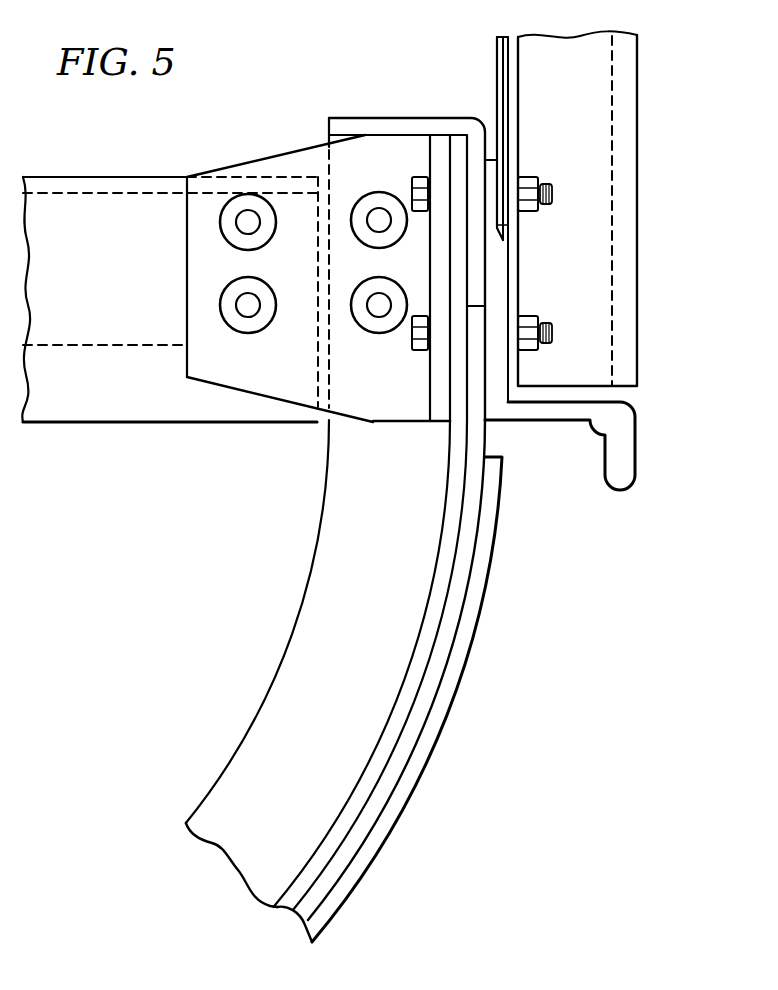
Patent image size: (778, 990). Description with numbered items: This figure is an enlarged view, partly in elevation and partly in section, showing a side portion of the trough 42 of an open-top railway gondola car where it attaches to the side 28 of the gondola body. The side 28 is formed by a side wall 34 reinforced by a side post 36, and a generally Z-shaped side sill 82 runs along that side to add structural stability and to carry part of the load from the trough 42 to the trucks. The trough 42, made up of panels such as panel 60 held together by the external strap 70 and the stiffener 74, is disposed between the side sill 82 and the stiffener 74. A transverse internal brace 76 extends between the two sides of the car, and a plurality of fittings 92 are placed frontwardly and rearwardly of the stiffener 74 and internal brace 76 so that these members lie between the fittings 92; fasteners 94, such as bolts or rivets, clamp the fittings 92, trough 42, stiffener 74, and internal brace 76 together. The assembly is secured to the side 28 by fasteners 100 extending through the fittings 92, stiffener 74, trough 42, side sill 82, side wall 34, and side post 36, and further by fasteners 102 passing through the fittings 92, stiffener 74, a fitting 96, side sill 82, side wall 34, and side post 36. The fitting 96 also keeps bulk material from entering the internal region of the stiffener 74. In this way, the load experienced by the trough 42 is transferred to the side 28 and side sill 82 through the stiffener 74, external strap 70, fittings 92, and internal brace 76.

The side 28 is at (690, 263).
The side wall 34 is at (496, 50).
The side post 36 is at (638, 200).
The trough 42 is at (432, 852).
The panel 60 is at (487, 434).
The external strap 70 is at (482, 612).
The stiffener 74 is at (298, 612).
The transverse internal brace 76 is at (92, 424).
The side sill 82 is at (638, 452).
The fitting 92 is at (278, 156).
The fastener 94 is at (381, 191).
The fitting 96 is at (414, 118).
The fastener 100 is at (529, 312).
The fastener 102 is at (531, 172).